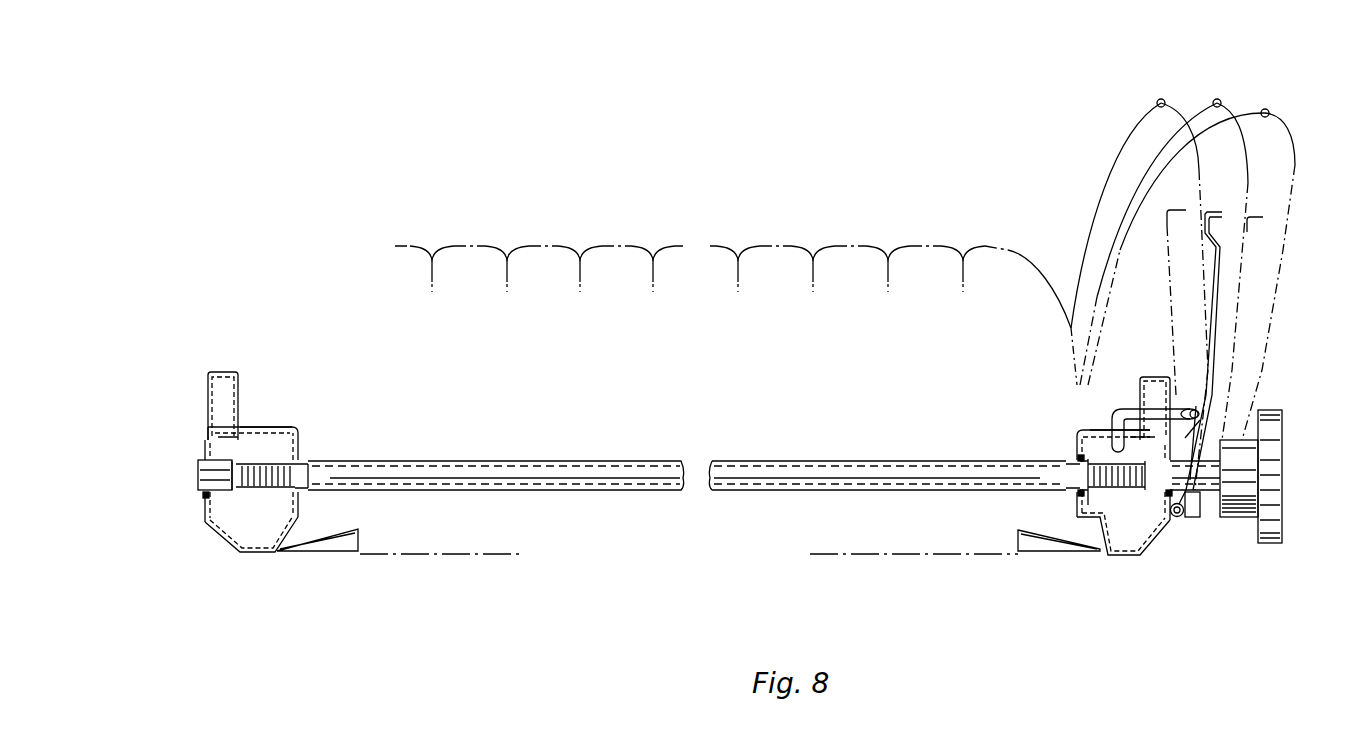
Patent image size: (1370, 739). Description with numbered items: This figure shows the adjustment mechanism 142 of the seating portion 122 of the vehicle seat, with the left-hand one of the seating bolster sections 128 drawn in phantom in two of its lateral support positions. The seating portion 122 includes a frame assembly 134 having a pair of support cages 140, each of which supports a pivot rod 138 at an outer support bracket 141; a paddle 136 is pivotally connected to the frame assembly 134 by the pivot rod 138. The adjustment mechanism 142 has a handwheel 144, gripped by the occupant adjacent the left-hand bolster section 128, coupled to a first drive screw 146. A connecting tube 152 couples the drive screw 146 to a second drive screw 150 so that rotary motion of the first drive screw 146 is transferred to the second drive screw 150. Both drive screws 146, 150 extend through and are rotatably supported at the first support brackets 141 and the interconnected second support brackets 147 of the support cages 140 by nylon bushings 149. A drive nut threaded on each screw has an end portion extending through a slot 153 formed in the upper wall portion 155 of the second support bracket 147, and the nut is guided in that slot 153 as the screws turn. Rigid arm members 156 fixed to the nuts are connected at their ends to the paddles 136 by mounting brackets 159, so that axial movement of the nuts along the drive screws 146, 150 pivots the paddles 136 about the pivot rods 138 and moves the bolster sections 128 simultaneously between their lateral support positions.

The seating portion 122 is at (808, 250).
The seating bolster sections 128 is at (1210, 103).
The frame assembly 134 is at (790, 556).
The paddles 136 is at (1217, 290).
The pivot rods 138 is at (1183, 517).
The support cages 140 is at (352, 545).
The outer support bracket 141 is at (210, 522).
The adjustment mechanism 142 is at (1302, 422).
The handwheel 144 is at (1283, 470).
The drive screw 146 is at (1097, 505).
The second support brackets 147 is at (308, 448).
The nylon bushings 149 is at (205, 495).
The second drive screw 150 is at (204, 452).
The connecting tube 152 is at (830, 492).
The slot 153 is at (283, 427).
The upper wall portion 155 is at (232, 428).
The arm members 156 is at (1148, 377).
The mounting brackets 159 is at (1200, 413).